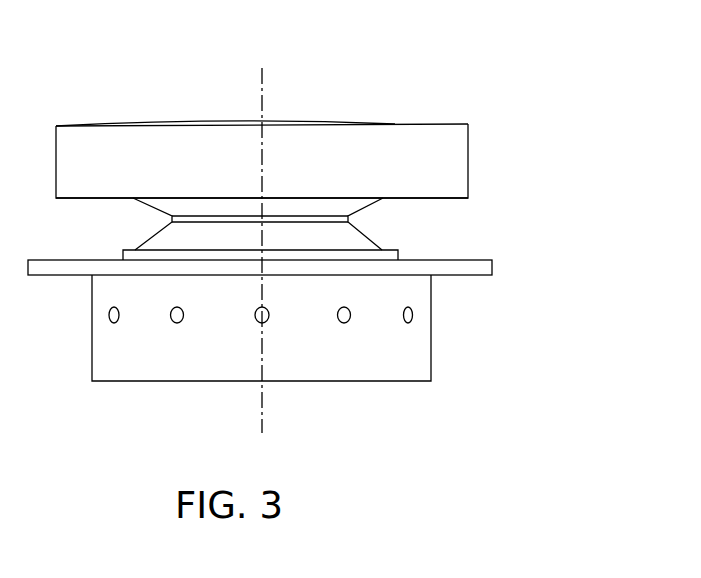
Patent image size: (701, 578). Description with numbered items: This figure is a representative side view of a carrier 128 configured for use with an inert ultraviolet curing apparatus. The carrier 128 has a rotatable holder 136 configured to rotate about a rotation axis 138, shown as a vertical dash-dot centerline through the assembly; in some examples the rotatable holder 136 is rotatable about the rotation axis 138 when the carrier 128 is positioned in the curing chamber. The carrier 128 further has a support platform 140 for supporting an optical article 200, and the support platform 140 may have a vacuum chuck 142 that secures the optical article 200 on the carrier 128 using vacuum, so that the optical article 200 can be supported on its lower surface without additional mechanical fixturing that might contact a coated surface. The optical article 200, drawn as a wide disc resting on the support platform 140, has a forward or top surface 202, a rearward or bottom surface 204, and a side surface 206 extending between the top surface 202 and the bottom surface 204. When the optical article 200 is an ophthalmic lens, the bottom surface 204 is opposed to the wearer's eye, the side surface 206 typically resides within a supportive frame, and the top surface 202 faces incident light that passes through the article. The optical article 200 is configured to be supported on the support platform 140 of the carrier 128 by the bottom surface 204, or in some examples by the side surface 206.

The carrier 128 is at (558, 202).
The optical article 200 is at (287, 72).
The top surface 202 is at (397, 124).
The bottom surface 204 is at (432, 198).
The side surface 206 is at (468, 158).
The support platform 140 is at (343, 243).
The vacuum chuck 142 is at (172, 207).
The rotatable holder 136 is at (402, 342).
The rotation axis 138 is at (258, 80).